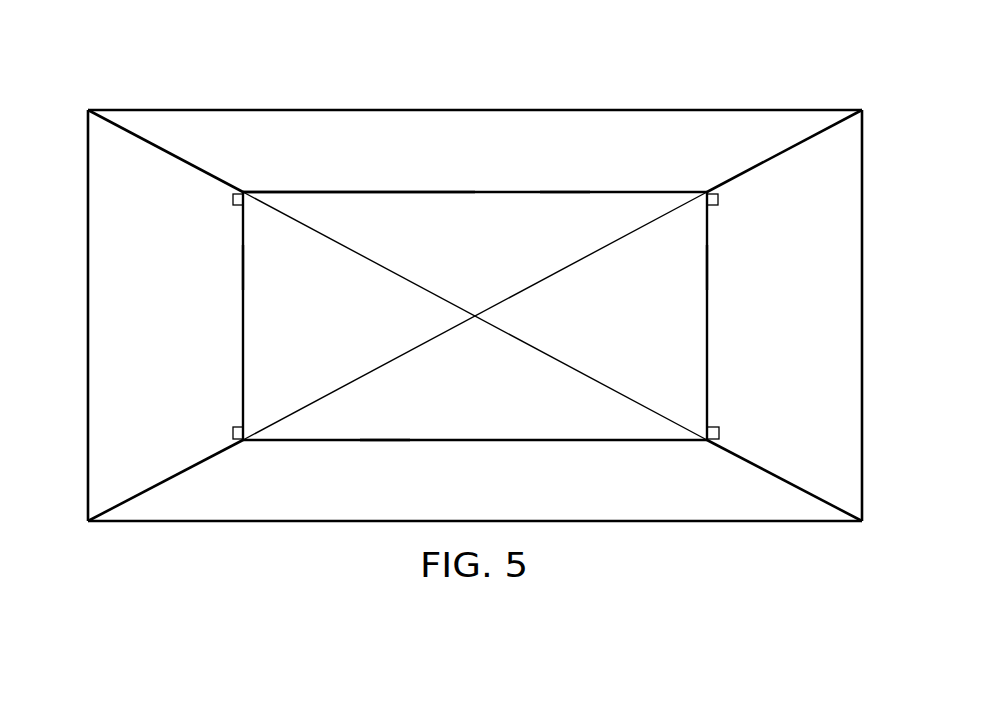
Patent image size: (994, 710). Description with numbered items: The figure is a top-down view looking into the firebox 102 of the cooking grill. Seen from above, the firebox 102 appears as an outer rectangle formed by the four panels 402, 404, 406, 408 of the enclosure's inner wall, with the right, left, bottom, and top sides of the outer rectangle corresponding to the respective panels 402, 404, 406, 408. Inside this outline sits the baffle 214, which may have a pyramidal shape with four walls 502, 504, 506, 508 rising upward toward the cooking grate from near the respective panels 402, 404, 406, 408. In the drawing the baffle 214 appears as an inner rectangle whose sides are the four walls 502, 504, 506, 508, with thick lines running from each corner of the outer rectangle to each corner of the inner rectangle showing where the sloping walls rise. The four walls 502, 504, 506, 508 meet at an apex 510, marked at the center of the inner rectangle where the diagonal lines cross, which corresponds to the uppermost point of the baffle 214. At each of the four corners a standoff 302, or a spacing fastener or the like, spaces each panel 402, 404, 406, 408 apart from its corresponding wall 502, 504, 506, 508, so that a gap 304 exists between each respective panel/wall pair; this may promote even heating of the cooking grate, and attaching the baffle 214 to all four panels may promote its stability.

The firebox 102 is at (278, 72).
The baffle 214 is at (340, 198).
The standoff 302 is at (232, 200).
The gap 304 is at (566, 188).
The panel 402 is at (855, 315).
The panel 404 is at (97, 315).
The panel 406 is at (298, 513).
The panel 408 is at (473, 118).
The wall 502 is at (700, 315).
The wall 504 is at (250, 315).
The wall 506 is at (475, 430).
The wall 508 is at (475, 198).
The apex 510 is at (475, 312).